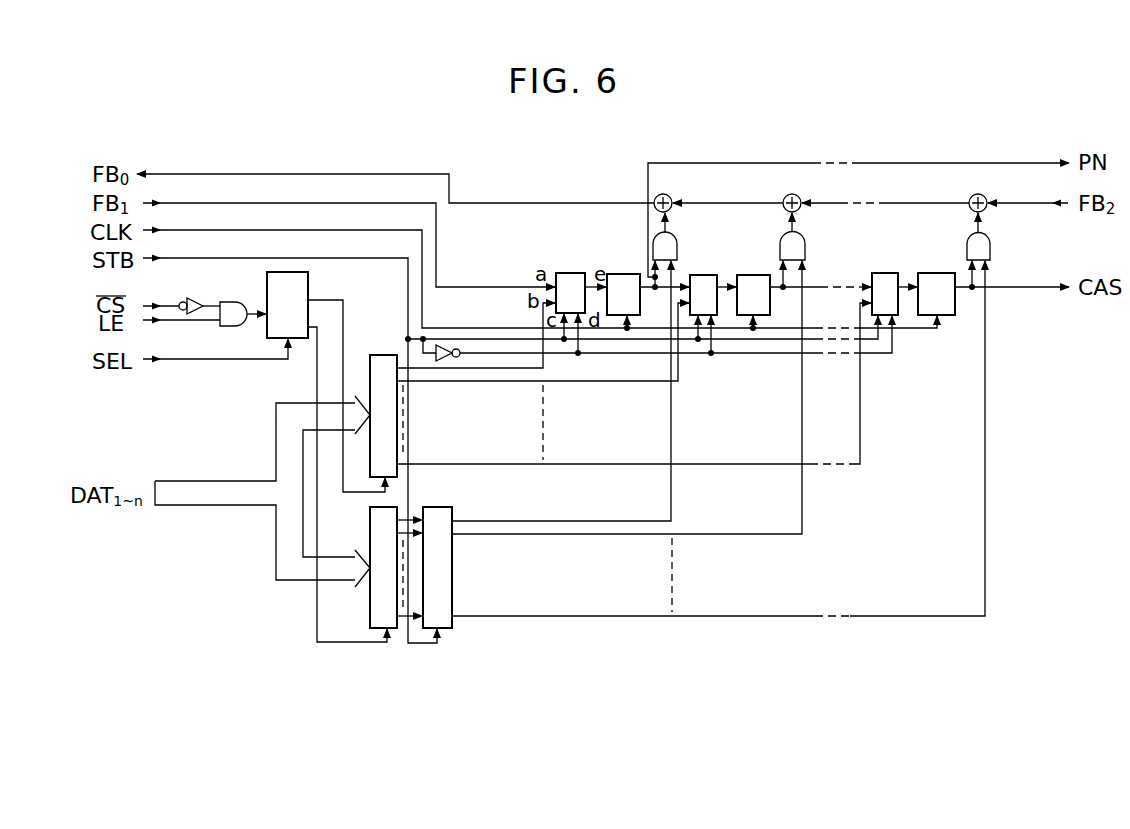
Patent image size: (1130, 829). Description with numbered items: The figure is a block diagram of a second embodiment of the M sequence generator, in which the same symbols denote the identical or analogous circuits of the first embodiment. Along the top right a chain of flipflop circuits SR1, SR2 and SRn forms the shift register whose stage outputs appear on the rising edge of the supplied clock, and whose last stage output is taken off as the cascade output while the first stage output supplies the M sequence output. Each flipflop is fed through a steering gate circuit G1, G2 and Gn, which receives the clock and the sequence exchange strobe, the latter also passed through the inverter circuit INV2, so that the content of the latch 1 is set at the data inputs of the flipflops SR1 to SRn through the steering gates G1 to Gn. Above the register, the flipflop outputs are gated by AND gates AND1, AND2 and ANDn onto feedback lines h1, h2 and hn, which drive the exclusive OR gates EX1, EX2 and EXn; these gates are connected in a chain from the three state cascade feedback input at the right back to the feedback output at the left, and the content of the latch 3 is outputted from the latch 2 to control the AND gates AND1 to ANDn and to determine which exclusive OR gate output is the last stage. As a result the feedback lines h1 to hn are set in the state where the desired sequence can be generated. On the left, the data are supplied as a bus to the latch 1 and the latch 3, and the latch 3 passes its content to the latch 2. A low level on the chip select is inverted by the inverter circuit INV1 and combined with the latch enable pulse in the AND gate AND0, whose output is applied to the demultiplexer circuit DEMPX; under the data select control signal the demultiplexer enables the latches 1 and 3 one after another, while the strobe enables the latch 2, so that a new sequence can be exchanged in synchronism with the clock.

The latch circuit 1 is at (383, 356).
The latch circuit 2 is at (440, 509).
The latch circuit 3 is at (374, 524).
The inverter circuit INV1 is at (199, 300).
The inverter circuit INV2 is at (438, 344).
The AND gate AND0 is at (232, 326).
The demultiplexer circuit DEMPX is at (287, 305).
The steering gate circuit G1 is at (570, 293).
The flipflop circuit SR1 is at (624, 294).
The exclusive OR gate EX1 is at (670, 190).
The AND gate AND1 is at (677, 248).
The feedback line h1 is at (667, 219).
The steering gate circuit G2 is at (704, 295).
The flipflop circuit SR2 is at (754, 295).
The exclusive OR gate EX2 is at (794, 190).
The AND gate AND2 is at (805, 248).
The feedback line h2 is at (794, 219).
The steering gate circuit Gn is at (885, 294).
The flipflop circuit SRn is at (936, 294).
The exclusive OR gate EXn is at (972, 190).
The AND gate ANDn is at (990, 248).
The feedback line hn is at (980, 219).